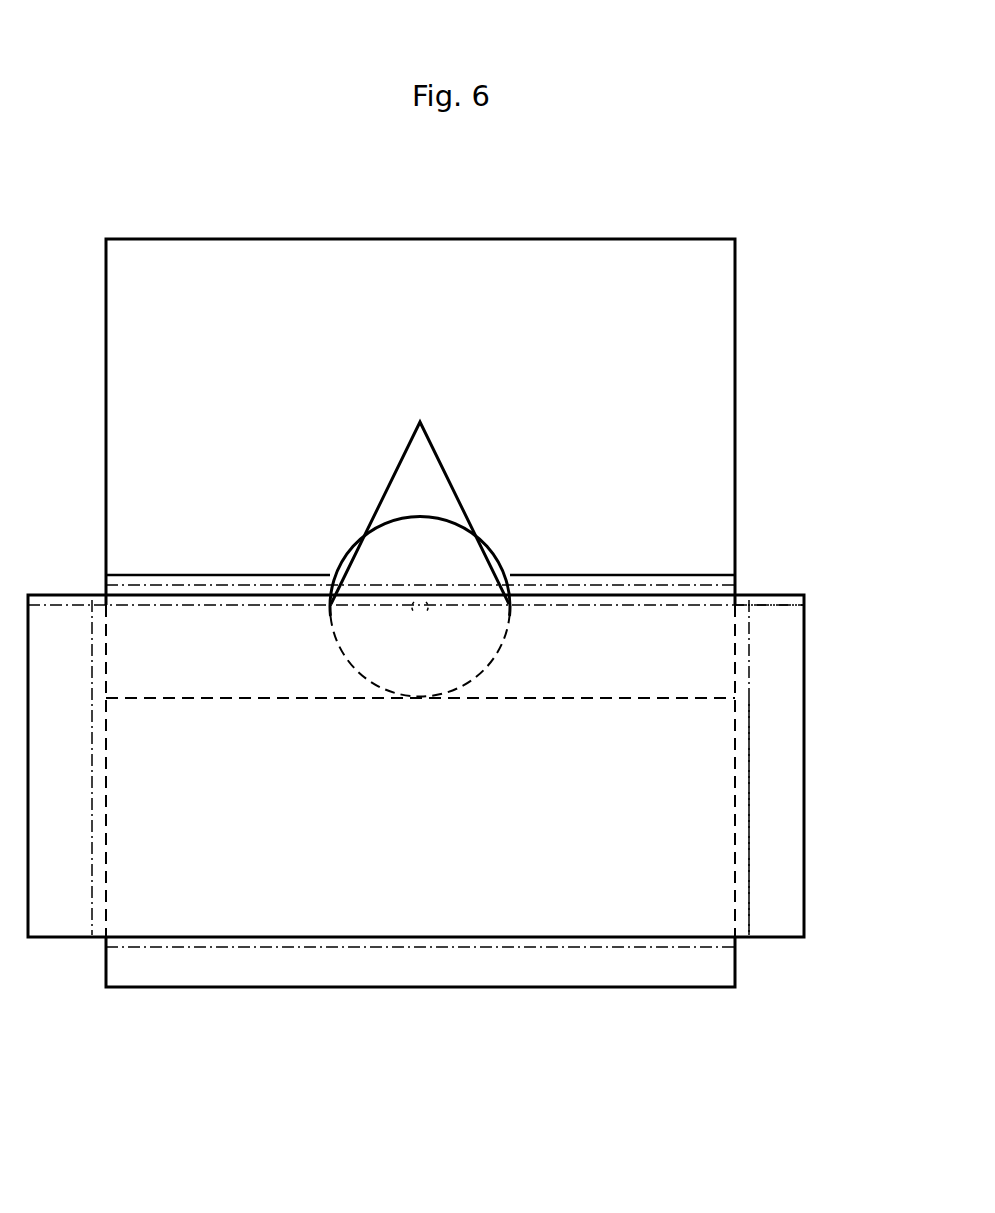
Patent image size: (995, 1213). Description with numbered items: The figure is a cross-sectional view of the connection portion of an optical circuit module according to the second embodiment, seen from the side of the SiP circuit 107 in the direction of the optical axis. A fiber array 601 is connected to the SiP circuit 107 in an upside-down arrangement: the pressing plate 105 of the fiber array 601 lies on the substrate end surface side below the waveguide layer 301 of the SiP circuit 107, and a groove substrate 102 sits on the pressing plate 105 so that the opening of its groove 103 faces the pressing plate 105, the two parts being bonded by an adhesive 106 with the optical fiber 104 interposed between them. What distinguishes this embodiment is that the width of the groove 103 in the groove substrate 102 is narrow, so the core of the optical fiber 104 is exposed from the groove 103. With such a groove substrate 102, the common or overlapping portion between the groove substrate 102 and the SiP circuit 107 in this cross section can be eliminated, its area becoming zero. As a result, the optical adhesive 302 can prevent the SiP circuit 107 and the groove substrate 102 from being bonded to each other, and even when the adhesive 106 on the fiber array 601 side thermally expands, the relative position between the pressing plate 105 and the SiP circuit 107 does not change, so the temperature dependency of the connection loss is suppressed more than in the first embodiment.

The fiber array 601 is at (668, 223).
The groove substrate 102 is at (720, 430).
The groove 103 is at (452, 470).
The optical fiber 104 is at (470, 548).
The pressing plate 105 is at (413, 972).
The adhesive 106 is at (598, 690).
The SiP circuit 107 is at (804, 815).
The waveguide layer 301 is at (763, 608).
The optical adhesive 302 is at (748, 757).